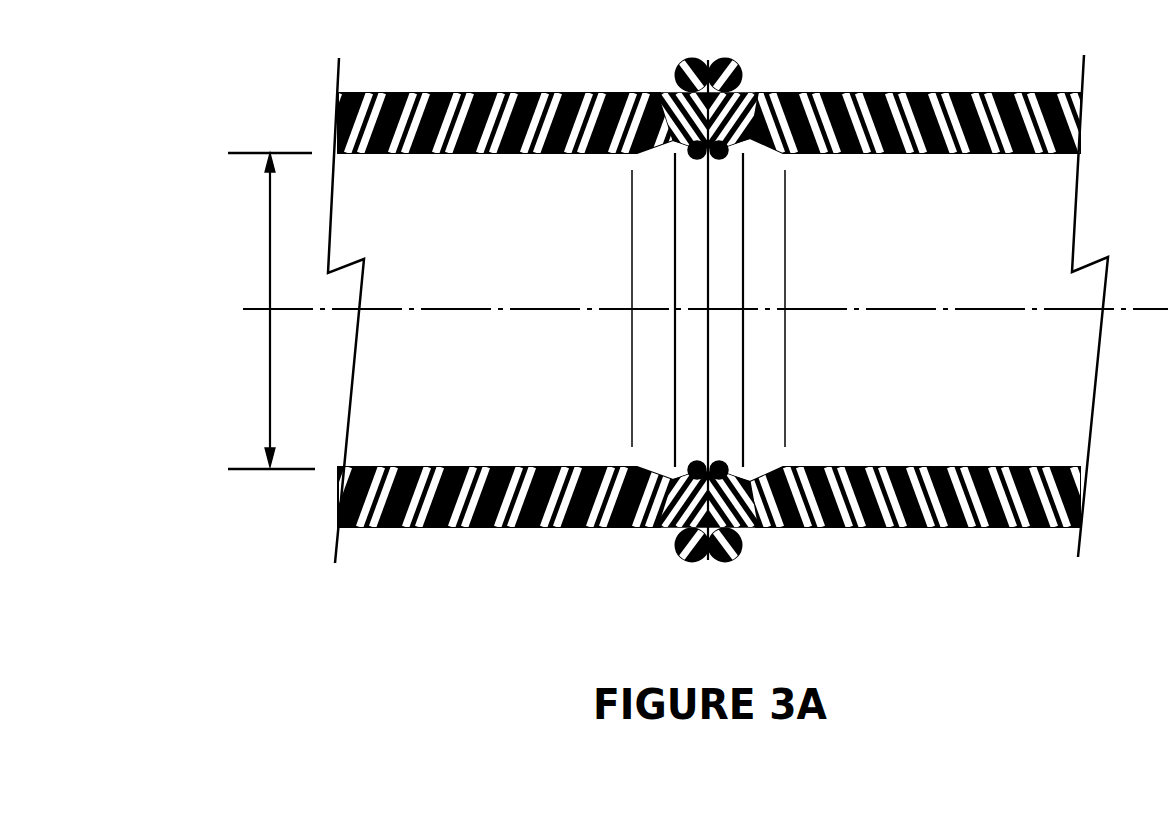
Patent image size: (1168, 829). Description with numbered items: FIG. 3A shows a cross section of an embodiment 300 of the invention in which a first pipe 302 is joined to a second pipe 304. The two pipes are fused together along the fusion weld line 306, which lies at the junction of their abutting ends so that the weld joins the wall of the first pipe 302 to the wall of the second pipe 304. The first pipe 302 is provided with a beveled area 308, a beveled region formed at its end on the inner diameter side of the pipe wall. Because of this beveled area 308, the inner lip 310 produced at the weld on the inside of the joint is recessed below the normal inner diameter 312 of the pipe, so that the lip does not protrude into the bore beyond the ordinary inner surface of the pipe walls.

The embodiment 300 is at (701, 598).
The first pipe 302 is at (363, 450).
The second pipe 304 is at (1030, 408).
The fusion weld line 306 is at (707, 397).
The beveled area 308 is at (660, 137).
The inner lip 310 is at (690, 160).
The normal inner diameter 312 is at (268, 288).